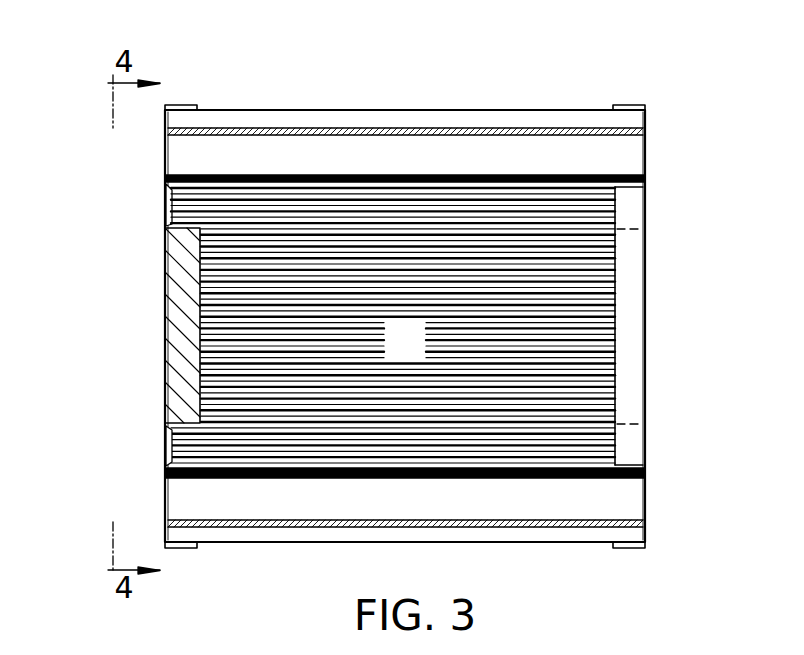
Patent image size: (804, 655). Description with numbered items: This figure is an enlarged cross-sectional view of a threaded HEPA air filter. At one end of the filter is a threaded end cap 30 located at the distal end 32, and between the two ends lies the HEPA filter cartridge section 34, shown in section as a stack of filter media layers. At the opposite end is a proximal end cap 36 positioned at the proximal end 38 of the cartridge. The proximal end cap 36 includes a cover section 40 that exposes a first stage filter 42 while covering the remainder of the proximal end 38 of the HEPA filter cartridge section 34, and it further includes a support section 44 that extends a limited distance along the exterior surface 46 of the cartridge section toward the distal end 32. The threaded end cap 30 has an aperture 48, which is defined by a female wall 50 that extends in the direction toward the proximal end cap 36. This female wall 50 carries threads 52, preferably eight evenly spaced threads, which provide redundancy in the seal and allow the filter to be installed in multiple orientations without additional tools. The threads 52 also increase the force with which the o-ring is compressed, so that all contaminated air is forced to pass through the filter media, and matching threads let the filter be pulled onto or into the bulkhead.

The threaded end cap 30 is at (162, 166).
The distal end 32 is at (162, 208).
The HEPA filter cartridge section 34 is at (390, 355).
The proximal end cap 36 is at (645, 210).
The proximal end 38 is at (615, 450).
The cover section 40 is at (645, 397).
The first stage filter 42 is at (645, 325).
The support section 44 is at (623, 548).
The exterior surface 46 is at (262, 543).
The aperture 48 is at (128, 347).
The female wall 50 is at (114, 438).
The threads 52 is at (177, 280).